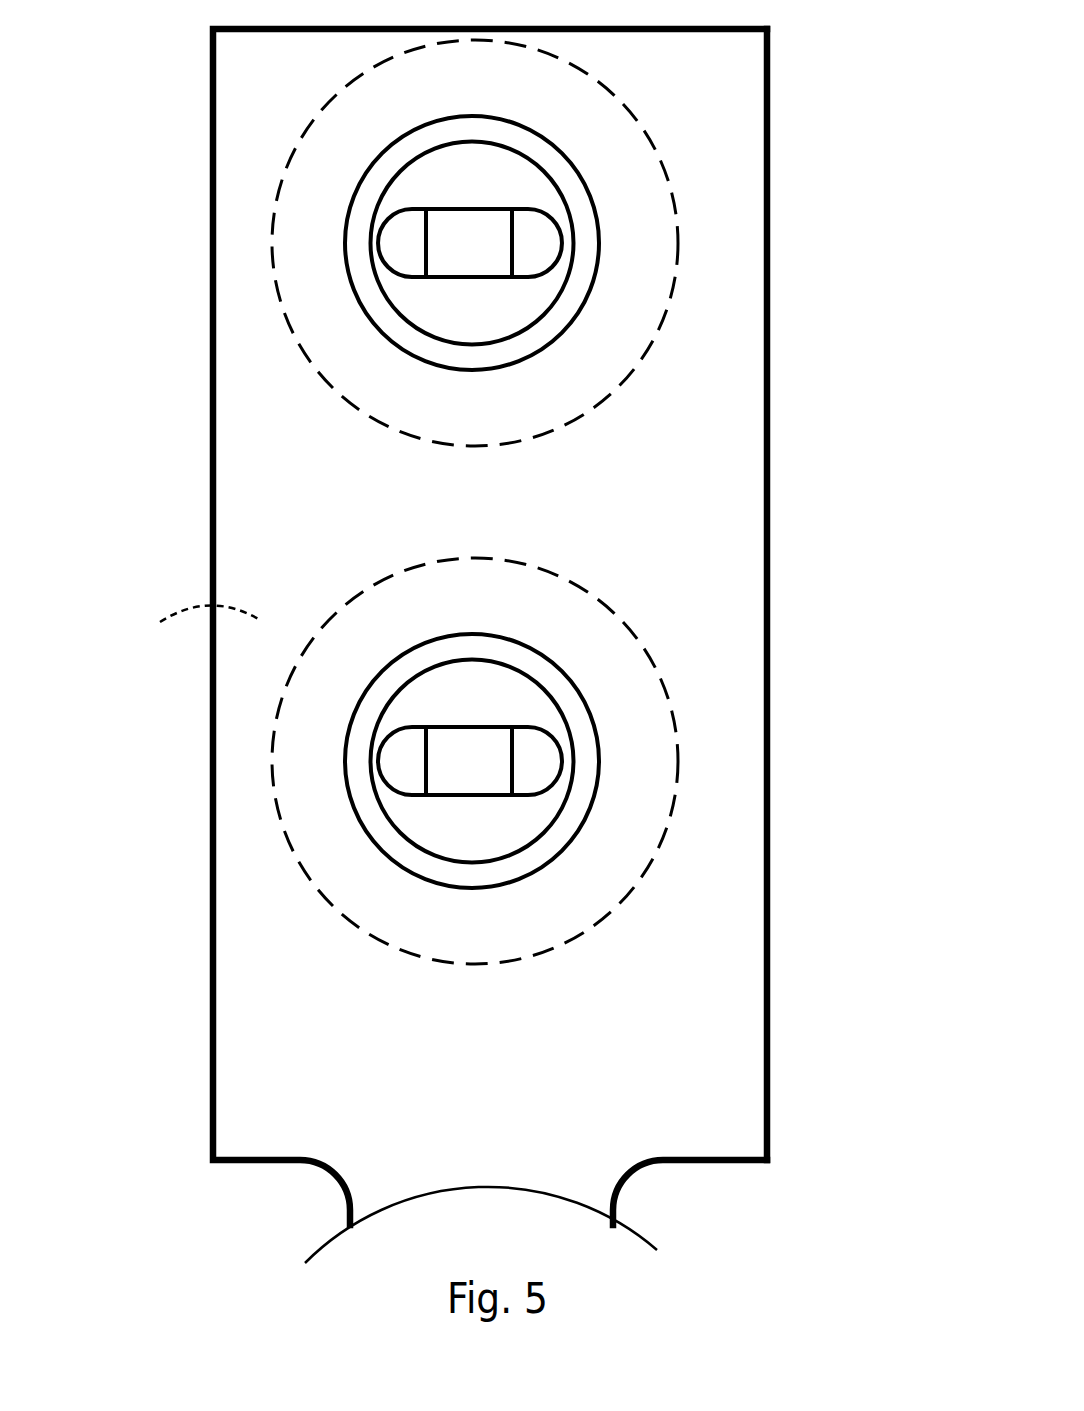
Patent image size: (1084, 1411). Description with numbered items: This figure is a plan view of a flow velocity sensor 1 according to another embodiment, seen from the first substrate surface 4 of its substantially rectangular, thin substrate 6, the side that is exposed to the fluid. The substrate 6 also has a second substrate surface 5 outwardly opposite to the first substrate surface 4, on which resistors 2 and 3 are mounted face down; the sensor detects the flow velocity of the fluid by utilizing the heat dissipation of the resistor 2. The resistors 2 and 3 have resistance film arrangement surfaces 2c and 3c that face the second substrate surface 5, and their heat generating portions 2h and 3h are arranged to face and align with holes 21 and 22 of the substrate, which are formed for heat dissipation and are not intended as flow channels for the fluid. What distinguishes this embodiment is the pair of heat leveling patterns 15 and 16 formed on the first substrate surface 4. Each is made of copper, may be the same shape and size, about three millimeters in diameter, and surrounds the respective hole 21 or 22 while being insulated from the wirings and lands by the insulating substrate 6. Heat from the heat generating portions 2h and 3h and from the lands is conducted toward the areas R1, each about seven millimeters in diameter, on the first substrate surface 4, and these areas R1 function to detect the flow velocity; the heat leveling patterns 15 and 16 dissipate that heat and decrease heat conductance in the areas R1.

The flow velocity sensor 1 is at (878, 152).
The resistor 2 is at (485, 243).
The resistance film arrangement surface 2c is at (498, 224).
The heat generating portion 2h is at (487, 263).
The hole 21 is at (451, 247).
The heat leveling pattern 15 is at (548, 323).
The resistor 3 is at (474, 761).
The resistance film arrangement surface 3c is at (493, 740).
The heat generating portion 3h is at (478, 780).
The hole 22 is at (446, 758).
The heat leveling pattern 16 is at (537, 853).
The first substrate surface 4 is at (415, 544).
The second substrate surface 5 is at (196, 625).
The substrate 6 is at (772, 503).
The area R1 is at (312, 90).